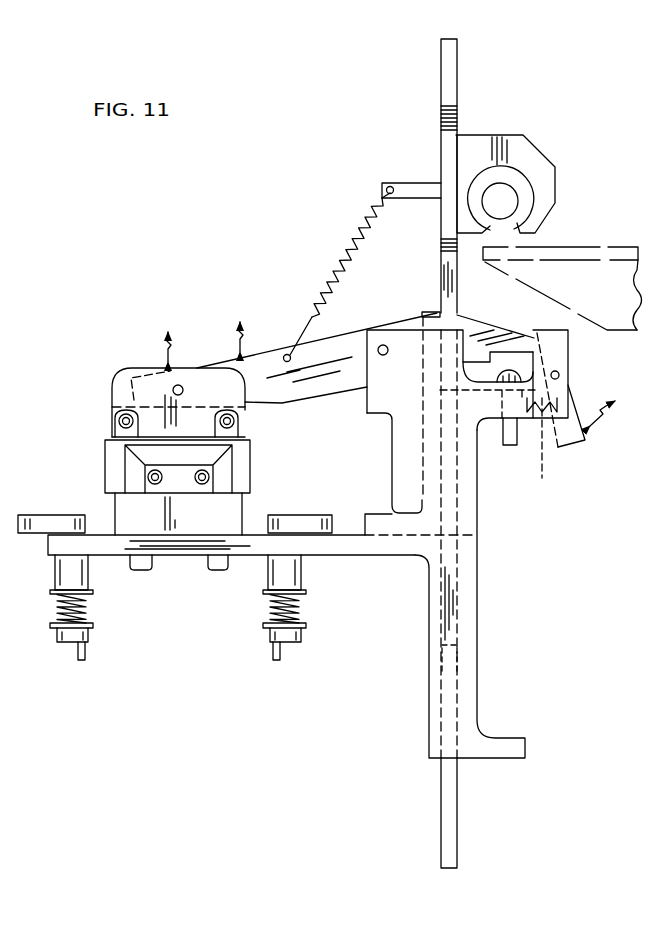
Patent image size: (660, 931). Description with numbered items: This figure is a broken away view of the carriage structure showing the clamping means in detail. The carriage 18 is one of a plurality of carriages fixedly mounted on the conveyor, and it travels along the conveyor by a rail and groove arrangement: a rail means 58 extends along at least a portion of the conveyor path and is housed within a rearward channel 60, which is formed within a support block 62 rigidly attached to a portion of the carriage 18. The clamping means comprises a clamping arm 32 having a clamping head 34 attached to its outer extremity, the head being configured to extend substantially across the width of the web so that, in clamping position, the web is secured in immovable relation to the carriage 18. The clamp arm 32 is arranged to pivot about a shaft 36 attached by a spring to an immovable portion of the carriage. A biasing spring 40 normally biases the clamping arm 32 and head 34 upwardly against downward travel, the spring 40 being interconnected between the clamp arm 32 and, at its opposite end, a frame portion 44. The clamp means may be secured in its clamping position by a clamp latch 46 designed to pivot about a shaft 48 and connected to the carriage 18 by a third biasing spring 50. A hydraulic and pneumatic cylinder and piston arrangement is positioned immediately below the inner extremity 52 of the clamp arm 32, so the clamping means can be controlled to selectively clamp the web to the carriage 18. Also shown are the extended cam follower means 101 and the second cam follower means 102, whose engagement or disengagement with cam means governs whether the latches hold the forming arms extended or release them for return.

The carriage 18 is at (420, 112).
The clamping arm 32 is at (302, 388).
The clamping head 34 is at (140, 373).
The shaft 36 is at (383, 345).
The biasing spring 40 is at (338, 262).
The frame portion 44 is at (398, 181).
The clamp latch 46 is at (582, 401).
The shaft 48 is at (559, 372).
The third biasing spring 50 is at (520, 442).
The inner extremity of the clamp arm 52 is at (503, 330).
The rail means 58 is at (512, 198).
The rearward channel 60 is at (510, 179).
The support block 62 is at (500, 140).
The extended cam follower means 101 is at (92, 602).
The second cam follower means 102 is at (262, 601).